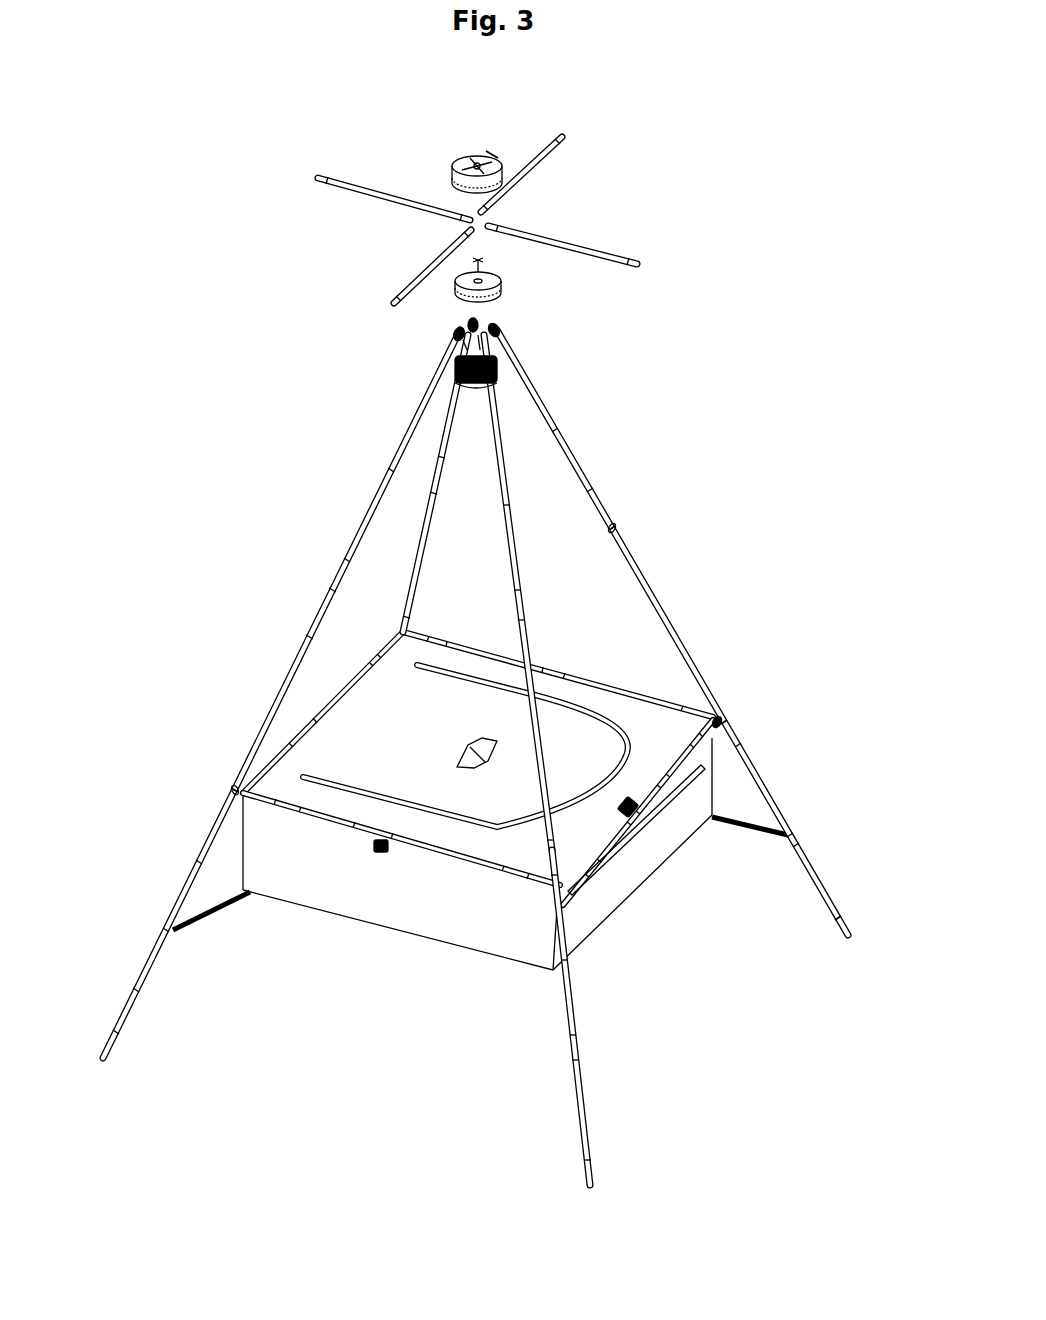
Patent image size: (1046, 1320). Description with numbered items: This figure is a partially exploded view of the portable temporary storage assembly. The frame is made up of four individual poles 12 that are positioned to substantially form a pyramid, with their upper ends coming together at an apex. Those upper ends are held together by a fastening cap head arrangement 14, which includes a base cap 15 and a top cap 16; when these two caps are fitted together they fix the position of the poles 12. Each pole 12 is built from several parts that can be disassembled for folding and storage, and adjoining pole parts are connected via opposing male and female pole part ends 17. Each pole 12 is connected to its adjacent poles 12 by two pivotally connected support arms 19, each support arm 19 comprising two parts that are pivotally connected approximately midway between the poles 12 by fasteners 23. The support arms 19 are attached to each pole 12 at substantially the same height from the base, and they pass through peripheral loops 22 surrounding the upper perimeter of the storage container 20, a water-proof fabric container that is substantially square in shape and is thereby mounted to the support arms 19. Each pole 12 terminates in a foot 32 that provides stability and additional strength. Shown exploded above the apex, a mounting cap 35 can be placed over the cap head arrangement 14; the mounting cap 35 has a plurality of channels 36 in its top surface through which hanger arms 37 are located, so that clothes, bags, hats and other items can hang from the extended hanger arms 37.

The pole 12 is at (560, 428).
The fastening cap head arrangement 14 is at (526, 310).
The base cap 15 is at (455, 372).
The top cap 16 is at (457, 285).
The pole part ends 17 is at (616, 527).
The support arm 19 is at (727, 719).
The storage container 20 is at (405, 880).
The peripheral loop 22 is at (684, 758).
The fastener 23 is at (380, 852).
The foot 32 is at (848, 928).
The mounting cap 35 is at (476, 158).
The channel 36 is at (492, 150).
The hanger arm 37 is at (535, 172).